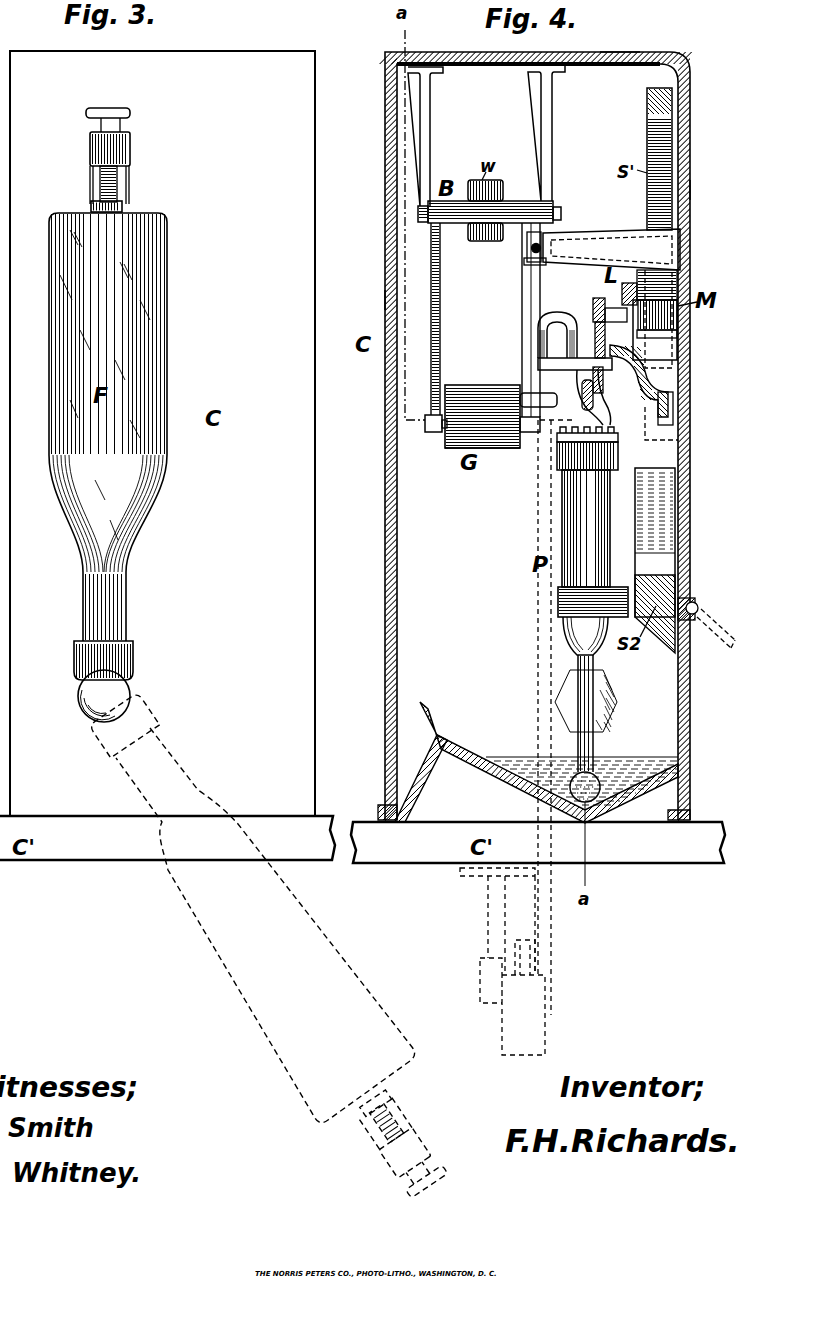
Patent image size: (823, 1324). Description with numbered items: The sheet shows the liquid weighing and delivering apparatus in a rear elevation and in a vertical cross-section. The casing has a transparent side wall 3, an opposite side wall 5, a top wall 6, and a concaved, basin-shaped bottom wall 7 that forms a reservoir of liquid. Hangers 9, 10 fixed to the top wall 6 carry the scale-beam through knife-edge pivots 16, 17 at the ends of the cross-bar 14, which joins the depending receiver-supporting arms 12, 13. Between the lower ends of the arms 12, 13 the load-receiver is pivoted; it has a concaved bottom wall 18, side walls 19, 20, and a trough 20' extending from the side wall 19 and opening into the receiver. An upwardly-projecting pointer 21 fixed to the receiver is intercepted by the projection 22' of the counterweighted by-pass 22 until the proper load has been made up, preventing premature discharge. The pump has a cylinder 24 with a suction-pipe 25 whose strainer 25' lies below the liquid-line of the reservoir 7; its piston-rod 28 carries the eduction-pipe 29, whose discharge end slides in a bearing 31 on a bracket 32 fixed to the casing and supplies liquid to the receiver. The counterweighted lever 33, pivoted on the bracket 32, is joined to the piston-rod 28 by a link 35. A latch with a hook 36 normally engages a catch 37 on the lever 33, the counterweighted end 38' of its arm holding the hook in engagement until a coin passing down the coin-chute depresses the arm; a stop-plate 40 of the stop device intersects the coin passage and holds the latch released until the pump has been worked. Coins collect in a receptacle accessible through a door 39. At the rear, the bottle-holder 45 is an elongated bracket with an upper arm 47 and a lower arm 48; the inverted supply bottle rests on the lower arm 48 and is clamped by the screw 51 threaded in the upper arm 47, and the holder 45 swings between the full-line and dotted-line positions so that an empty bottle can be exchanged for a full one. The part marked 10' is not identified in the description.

In FIG. 4, the side wall 3 is at (385, 296).
In FIG. 4, the side wall 5 is at (690, 192).
In FIG. 4, the top wall 6 is at (620, 64).
In FIG. 4, the basin-shaped bottom wall 7 is at (520, 788).
In FIG. 4, the hanger 9 is at (430, 118).
In FIG. 4, the hanger 10 is at (536, 132).
In FIG. 4, the post 10' is at (627, 402).
In FIG. 4, the receiver-supporting arm 12 is at (448, 289).
In FIG. 4, the receiver-supporting arm 13 is at (522, 288).
In FIG. 4, the cross-bar 14 is at (515, 201).
In FIG. 4, the knife-edge pivot 16 is at (418, 211).
In FIG. 4, the knife-edge pivot 17 is at (561, 212).
In FIG. 4, the concaved bottom wall 18 is at (493, 448).
In FIG. 4, the side wall 19 is at (446, 440).
In FIG. 4, the side wall 20 is at (523, 443).
In FIG. 4, the flange or trough 20' is at (515, 387).
In FIG. 4, the arm or pointer 21 is at (522, 306).
In FIG. 4, the by-pass 22 is at (511, 250).
In FIG. 4, the projection 22' is at (511, 271).
In FIG. 4, the cylinder 24 is at (570, 525).
In FIG. 4, the suction-pipe 25 is at (592, 712).
In FIG. 4, the strainer 25' is at (606, 768).
In FIG. 4, the piston-rod 28 is at (598, 403).
In FIG. 4, the eduction-pipe 29 is at (538, 338).
In FIG. 4, the bearing 31 is at (540, 358).
In FIG. 4, the bracket 32 is at (660, 362).
In FIG. 4, the pump actuator or lever 33 is at (597, 307).
In FIG. 4, the link 35 is at (580, 408).
In FIG. 4, the locking arm or hook 36 is at (677, 340).
In FIG. 4, the catch 37 is at (613, 300).
In FIG. 4, the counterweighted end 38' is at (648, 271).
In FIG. 4, the door 39 is at (696, 615).
In FIG. 4, the stop-plate 40 is at (677, 322).
In FIG. 3, the vessel-holder 45 is at (128, 197).
In FIG. 3, the upper arm 47 is at (130, 150).
In FIG. 3, the lower arm 48 is at (74, 662).
In FIG. 3, the clamping device 51 is at (100, 184).